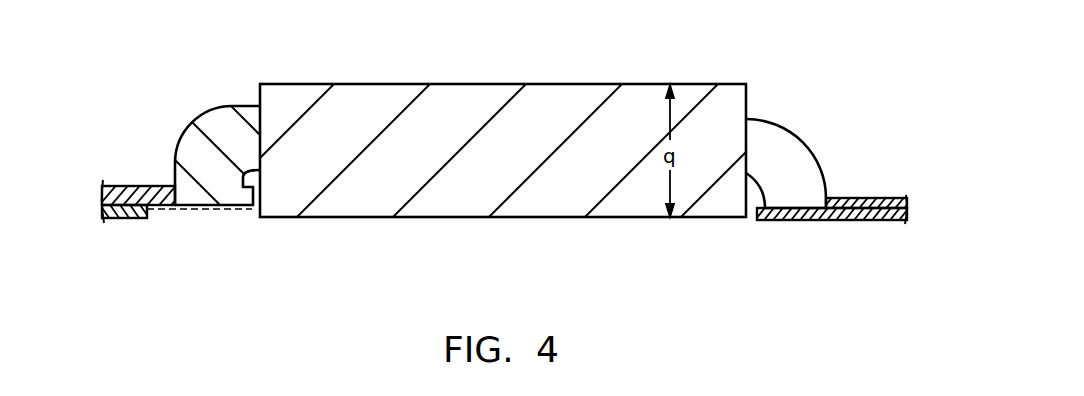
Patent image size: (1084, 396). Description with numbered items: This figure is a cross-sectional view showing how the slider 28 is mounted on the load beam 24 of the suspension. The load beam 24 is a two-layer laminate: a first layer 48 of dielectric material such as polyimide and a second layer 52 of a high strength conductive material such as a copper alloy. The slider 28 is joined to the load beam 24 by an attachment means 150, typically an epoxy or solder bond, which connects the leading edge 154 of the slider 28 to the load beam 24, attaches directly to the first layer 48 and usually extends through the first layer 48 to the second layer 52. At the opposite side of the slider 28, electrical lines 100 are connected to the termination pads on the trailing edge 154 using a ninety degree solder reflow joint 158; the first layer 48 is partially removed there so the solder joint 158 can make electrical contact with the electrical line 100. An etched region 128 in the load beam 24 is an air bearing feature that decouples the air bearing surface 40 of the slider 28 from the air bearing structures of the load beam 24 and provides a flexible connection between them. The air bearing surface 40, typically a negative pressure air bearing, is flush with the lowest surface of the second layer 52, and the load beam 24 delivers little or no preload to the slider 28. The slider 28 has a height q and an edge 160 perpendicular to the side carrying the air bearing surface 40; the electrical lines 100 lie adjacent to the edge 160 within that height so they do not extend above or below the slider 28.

The load beam 24 is at (130, 230).
The slider 28 is at (317, 82).
The air bearing surface 40 is at (333, 218).
The first layer 48 is at (103, 193).
The second layer 52 is at (103, 208).
The electrical lines 100 is at (790, 222).
The etched region 128 is at (184, 210).
The attachment means 150 is at (193, 131).
The leading edge 154 is at (258, 92).
The solder reflow joint 158 is at (797, 132).
The edge 160 is at (616, 168).